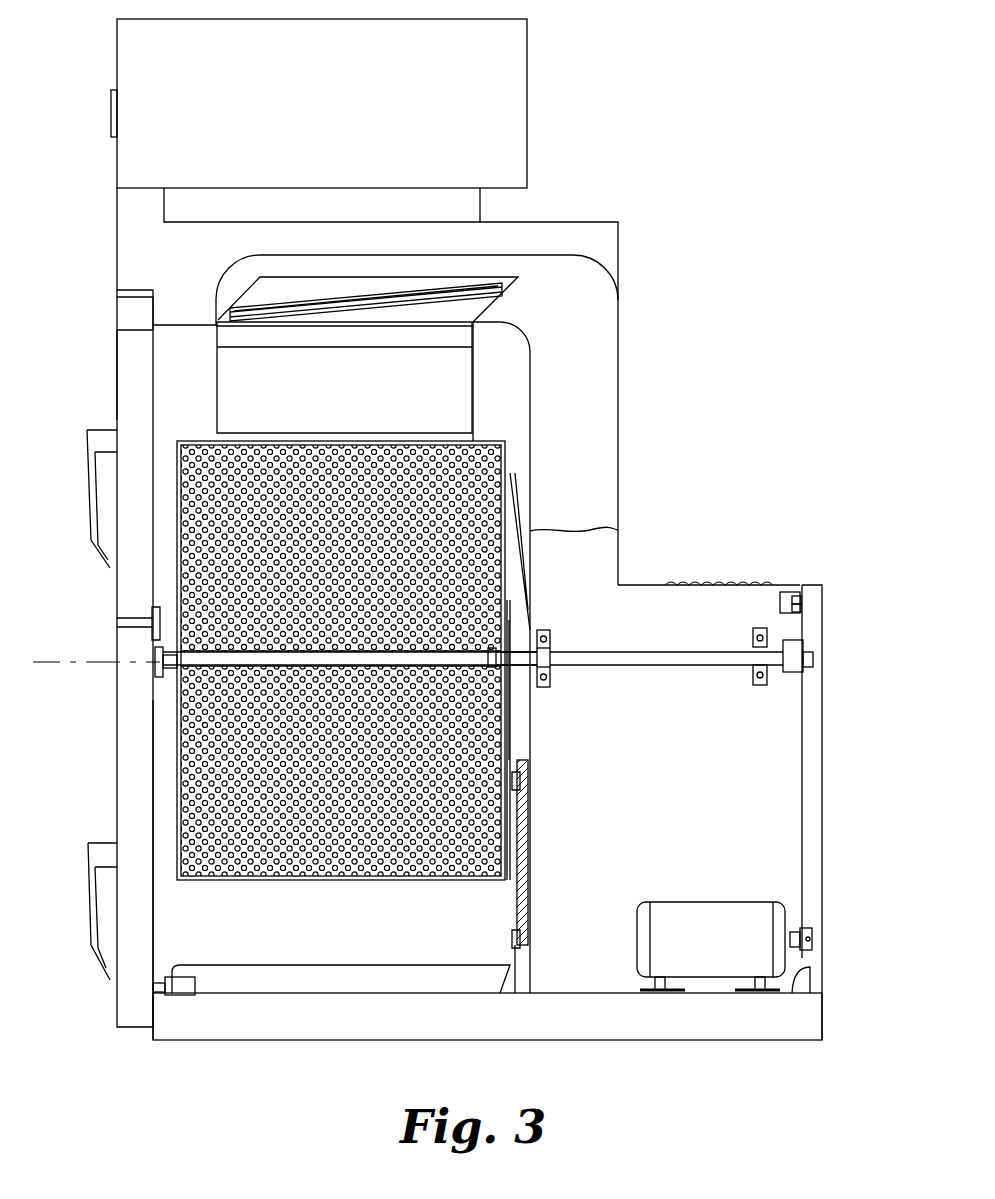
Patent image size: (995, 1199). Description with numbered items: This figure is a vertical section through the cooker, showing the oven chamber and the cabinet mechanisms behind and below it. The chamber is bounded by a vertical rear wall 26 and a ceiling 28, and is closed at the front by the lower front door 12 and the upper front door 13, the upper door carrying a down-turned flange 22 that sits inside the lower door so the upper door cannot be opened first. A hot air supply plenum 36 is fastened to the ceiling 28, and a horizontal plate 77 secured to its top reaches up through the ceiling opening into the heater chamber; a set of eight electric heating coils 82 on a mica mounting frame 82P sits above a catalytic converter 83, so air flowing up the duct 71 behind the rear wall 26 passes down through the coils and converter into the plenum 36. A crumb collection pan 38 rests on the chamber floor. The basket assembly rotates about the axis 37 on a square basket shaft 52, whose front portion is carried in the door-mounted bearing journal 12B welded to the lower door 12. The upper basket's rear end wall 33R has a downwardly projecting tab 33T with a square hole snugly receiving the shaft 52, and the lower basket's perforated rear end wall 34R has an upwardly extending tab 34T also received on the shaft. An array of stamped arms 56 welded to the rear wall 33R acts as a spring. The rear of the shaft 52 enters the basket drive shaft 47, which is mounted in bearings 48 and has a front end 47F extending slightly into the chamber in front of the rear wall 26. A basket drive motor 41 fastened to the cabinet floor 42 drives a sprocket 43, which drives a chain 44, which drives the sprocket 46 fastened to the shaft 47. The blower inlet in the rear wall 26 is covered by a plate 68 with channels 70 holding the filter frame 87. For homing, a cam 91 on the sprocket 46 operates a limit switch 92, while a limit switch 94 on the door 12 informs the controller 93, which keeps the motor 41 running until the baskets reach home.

The lower front door 12 is at (117, 808).
The door mounted bearing journal 12B is at (178, 700).
The upper front door 13 is at (117, 365).
The down-turned flange 22 is at (118, 410).
The rear wall 26 is at (513, 398).
The ceiling 28 is at (152, 333).
The rear end wall 33R is at (515, 568).
The downwardly projecting tab 33T is at (517, 673).
The upwardly extending tab 34T is at (483, 645).
The perforated rear end wall 34R is at (503, 755).
The hot air supply plenum 36 is at (368, 400).
The rotational axis 37 is at (52, 662).
The crumb collection pan 38 is at (247, 987).
The basket drive motor 41 is at (697, 950).
The floor of the cabinet 42 is at (810, 972).
The sprocket 43 is at (805, 940).
The chain 44 is at (803, 853).
The sprocket 46 is at (808, 680).
The basket drive shaft 47 is at (703, 646).
The front end 47F is at (545, 630).
The bearings 48 is at (555, 650).
The basket shaft 52 is at (310, 663).
The arms 56 is at (527, 533).
The plate 68 is at (522, 995).
The channels 70 is at (507, 780).
The duct 71 is at (582, 425).
The horizontal plate 77 is at (218, 330).
The electric heating coils 82 is at (310, 303).
The mounting frame 82P is at (372, 303).
The catalytic converter 83 is at (432, 320).
The frame 87 is at (497, 892).
The cam 91 is at (795, 618).
The limit switch 92 is at (800, 584).
The controller 93 is at (207, 128).
The limit switch 94 is at (178, 993).